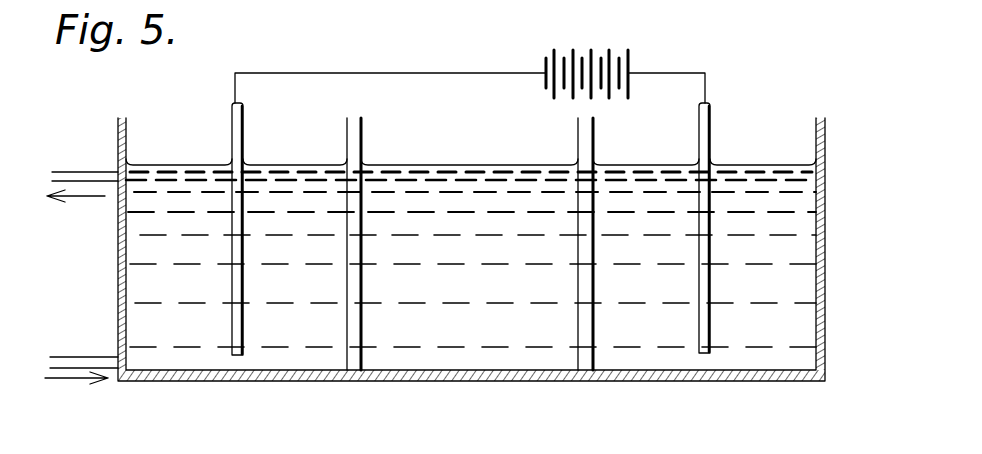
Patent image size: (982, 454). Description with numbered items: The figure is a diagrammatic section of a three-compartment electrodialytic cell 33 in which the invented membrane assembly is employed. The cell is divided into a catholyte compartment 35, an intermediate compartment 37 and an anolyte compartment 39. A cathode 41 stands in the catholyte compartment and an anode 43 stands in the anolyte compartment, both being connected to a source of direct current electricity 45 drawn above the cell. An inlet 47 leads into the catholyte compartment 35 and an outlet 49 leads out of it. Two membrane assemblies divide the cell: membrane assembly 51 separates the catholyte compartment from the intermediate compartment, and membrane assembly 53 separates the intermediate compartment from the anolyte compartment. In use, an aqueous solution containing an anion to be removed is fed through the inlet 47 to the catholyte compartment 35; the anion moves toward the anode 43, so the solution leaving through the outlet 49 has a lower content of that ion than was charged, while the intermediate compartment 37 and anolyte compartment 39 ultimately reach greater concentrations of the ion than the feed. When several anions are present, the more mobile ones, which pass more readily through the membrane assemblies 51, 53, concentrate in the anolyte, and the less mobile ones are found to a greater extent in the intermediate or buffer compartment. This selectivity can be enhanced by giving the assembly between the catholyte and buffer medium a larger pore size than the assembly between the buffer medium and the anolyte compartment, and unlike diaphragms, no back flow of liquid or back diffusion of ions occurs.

The three-compartment electrodialytic cell 33 is at (770, 115).
The catholyte compartment 35 is at (178, 250).
The intermediate compartment 37 is at (468, 205).
The anolyte compartment 39 is at (797, 224).
The cathode 41 is at (243, 284).
The anode 43 is at (700, 284).
The source of direct current electricity 45 is at (585, 45).
The inlet 47 is at (85, 357).
The outlet 49 is at (96, 172).
The membrane assembly 51 is at (362, 282).
The membrane assembly 53 is at (587, 322).